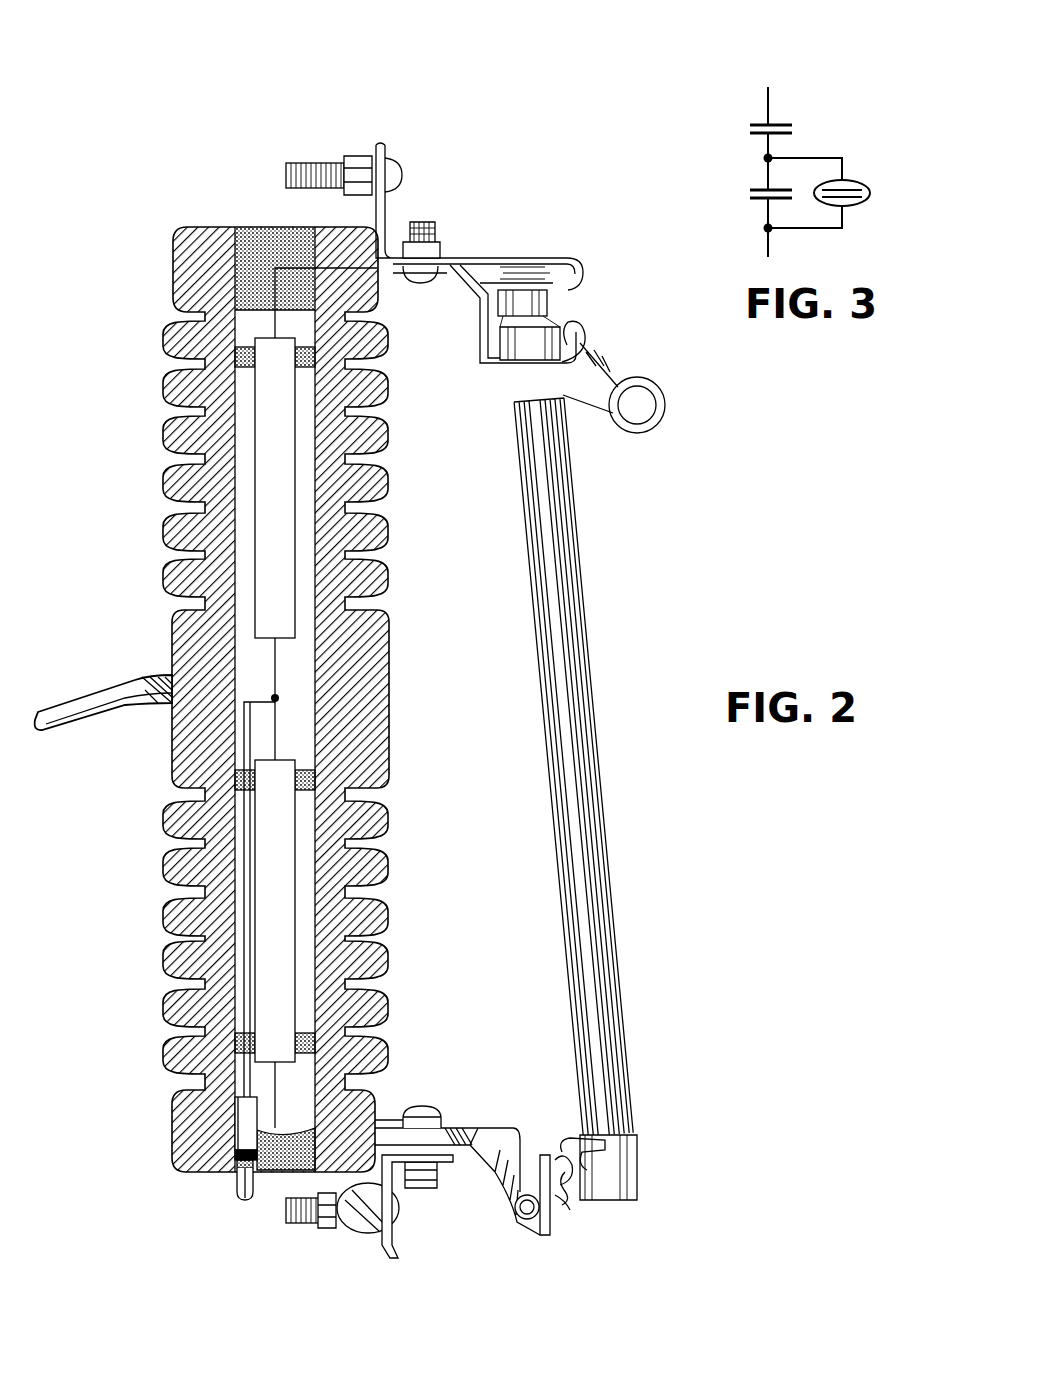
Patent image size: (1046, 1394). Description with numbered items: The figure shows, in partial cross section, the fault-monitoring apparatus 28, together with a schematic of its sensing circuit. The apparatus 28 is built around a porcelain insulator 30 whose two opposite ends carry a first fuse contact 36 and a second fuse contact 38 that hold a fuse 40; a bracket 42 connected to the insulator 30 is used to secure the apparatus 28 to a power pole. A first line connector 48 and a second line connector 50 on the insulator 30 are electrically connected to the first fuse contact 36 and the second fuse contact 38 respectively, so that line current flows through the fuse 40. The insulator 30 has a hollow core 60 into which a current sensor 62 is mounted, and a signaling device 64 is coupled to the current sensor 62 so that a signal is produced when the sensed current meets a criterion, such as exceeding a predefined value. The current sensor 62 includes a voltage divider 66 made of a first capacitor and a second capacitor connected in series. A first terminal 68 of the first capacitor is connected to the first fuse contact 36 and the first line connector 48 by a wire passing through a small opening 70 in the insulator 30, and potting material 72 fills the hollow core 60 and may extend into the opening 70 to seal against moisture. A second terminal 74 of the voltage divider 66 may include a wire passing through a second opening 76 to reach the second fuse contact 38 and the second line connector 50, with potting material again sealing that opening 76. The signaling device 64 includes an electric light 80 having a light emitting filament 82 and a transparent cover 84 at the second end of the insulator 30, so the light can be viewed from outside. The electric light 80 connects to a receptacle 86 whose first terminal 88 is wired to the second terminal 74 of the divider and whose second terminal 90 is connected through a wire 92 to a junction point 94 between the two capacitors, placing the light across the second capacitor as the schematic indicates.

In FIG. 2, the apparatus 28 is at (123, 208).
In FIG. 2, the porcelain insulator 30 is at (170, 395).
In FIG. 2, the first fuse contact 36 is at (489, 278).
In FIG. 2, the second fuse contact 38 is at (548, 1225).
In FIG. 2, the fuse 40 is at (600, 915).
In FIG. 2, the bracket 42 is at (78, 702).
In FIG. 2, the first line connector 48 is at (392, 160).
In FIG. 2, the second line connector 50 is at (375, 1240).
In FIG. 2, the hollow core 60 is at (242, 318).
In FIG. 2, the current sensor 62 is at (285, 637).
In FIG. 3, the current sensor 62 is at (763, 145).
In FIG. 2, the signaling device 64 is at (165, 1147).
In FIG. 3, the voltage divider 66 is at (708, 183).
In FIG. 2, the first terminal 68 is at (288, 258).
In FIG. 3, the first terminal 68 is at (768, 102).
In FIG. 2, the small opening 70 is at (383, 252).
In FIG. 2, the potting material 72 is at (240, 258).
In FIG. 2, the second terminal 74 is at (280, 1105).
In FIG. 3, the second terminal 74 is at (762, 238).
In FIG. 2, the second opening 76 is at (340, 1130).
In FIG. 2, the electric light 80 is at (230, 1183).
In FIG. 2, the light emitting filament 82 is at (238, 1196).
In FIG. 2, the transparent cover 84 is at (247, 1200).
In FIG. 2, the receptacle 86 is at (236, 1112).
In FIG. 2, the first terminal 88 is at (233, 1125).
In FIG. 2, the second terminal 90 is at (243, 1097).
In FIG. 2, the wire 92 is at (246, 868).
In FIG. 2, the junction point 94 is at (280, 700).